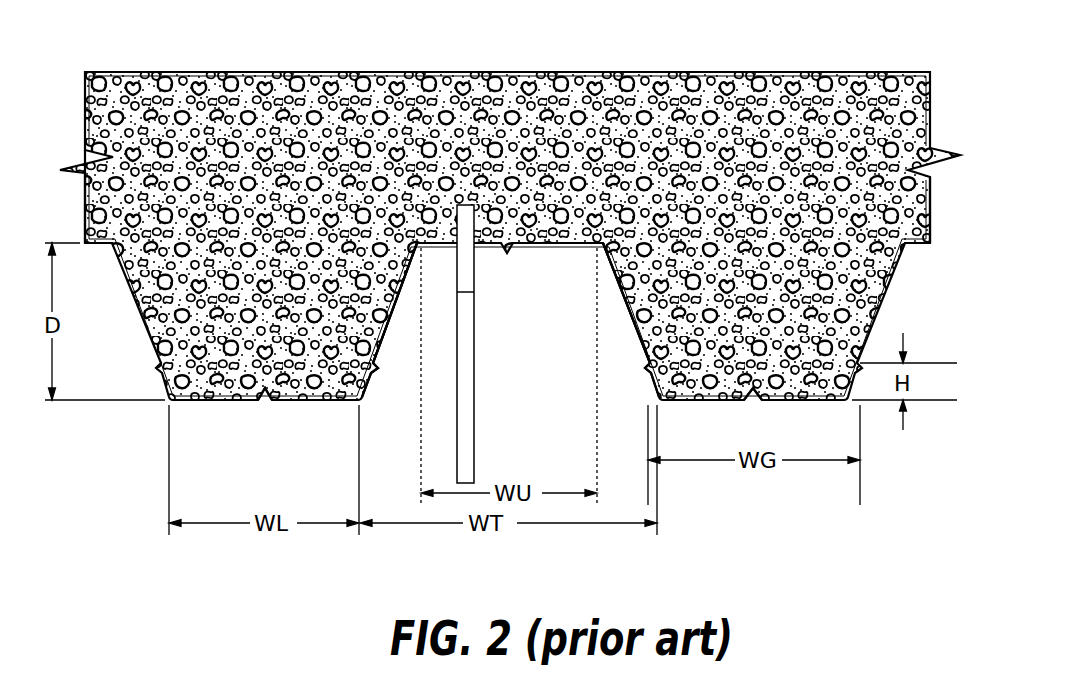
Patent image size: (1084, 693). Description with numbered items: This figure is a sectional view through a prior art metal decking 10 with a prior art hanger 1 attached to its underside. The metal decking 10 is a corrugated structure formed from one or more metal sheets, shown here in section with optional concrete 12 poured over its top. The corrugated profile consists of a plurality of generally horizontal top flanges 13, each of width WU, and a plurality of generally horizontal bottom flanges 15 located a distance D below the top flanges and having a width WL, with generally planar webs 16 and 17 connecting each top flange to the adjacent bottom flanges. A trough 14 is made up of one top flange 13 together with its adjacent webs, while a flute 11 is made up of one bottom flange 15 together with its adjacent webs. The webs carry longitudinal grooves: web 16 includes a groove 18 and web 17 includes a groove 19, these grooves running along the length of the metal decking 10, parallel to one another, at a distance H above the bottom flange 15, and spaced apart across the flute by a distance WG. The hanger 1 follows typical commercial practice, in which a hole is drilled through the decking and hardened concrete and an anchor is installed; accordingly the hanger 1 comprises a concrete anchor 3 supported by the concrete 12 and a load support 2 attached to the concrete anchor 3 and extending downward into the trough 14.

The metal decking 10 is at (376, 48).
The flute 11 is at (168, 102).
The concrete 12 is at (283, 406).
The top flange 13 is at (543, 247).
The trough 14 is at (456, 551).
The bottom flange 15 is at (303, 403).
The web 16 is at (616, 286).
The web 17 is at (362, 392).
The groove 18 is at (648, 370).
The groove 19 is at (376, 365).
The hanger 1 is at (495, 325).
The load support 2 is at (475, 405).
The concrete anchor 3 is at (474, 258).